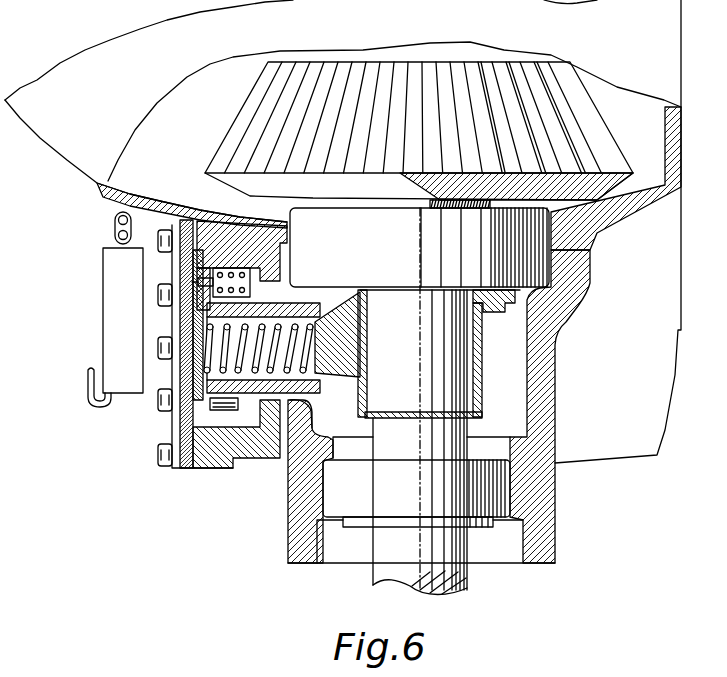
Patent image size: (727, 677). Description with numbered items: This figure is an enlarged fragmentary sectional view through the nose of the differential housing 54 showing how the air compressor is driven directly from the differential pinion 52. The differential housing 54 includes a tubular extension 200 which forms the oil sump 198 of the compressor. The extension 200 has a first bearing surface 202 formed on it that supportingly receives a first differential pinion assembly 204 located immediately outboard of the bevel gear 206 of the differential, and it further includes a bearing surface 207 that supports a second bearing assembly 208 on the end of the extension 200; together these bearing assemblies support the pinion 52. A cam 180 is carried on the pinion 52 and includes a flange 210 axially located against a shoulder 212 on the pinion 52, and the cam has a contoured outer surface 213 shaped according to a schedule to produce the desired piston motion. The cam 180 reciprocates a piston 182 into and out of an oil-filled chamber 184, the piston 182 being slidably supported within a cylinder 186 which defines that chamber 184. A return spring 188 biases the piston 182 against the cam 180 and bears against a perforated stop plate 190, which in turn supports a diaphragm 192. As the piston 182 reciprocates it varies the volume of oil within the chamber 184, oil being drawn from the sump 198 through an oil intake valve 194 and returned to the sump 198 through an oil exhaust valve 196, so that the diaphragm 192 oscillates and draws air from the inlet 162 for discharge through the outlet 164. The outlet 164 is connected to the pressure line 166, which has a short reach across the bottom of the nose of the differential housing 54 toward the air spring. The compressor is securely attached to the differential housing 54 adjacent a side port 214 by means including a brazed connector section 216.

The differential housing 54 is at (100, 181).
The differential pinion 52 is at (455, 363).
The inlet 162 is at (117, 236).
The outlet 164 is at (89, 401).
The pressure line 166 is at (115, 218).
The cam 180 is at (513, 303).
The piston 182 is at (330, 337).
The oil-filled chamber 184 is at (272, 330).
The cylinder 186 is at (312, 332).
The return spring 188 is at (322, 310).
The perforated stop plate 190 is at (203, 262).
The diaphragm 192 is at (187, 400).
The oil intake valve 194 is at (223, 413).
The oil exhaust valve 196 is at (228, 272).
The oil sump 198 is at (250, 425).
The tubular extension 200 is at (555, 380).
The first bearing surface 202 is at (555, 250).
The first differential pinion assembly 204 is at (527, 230).
The bevel gear 206 is at (590, 130).
The bearing surface 207 is at (500, 484).
The second bearing assembly 208 is at (505, 522).
The flange 210 is at (503, 306).
The shoulder 212 is at (404, 284).
The outer surface 213 is at (330, 353).
The side port 214 is at (300, 402).
The brazed connector section 216 is at (281, 457).